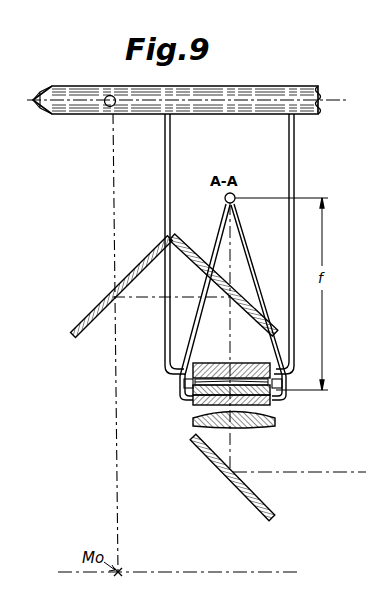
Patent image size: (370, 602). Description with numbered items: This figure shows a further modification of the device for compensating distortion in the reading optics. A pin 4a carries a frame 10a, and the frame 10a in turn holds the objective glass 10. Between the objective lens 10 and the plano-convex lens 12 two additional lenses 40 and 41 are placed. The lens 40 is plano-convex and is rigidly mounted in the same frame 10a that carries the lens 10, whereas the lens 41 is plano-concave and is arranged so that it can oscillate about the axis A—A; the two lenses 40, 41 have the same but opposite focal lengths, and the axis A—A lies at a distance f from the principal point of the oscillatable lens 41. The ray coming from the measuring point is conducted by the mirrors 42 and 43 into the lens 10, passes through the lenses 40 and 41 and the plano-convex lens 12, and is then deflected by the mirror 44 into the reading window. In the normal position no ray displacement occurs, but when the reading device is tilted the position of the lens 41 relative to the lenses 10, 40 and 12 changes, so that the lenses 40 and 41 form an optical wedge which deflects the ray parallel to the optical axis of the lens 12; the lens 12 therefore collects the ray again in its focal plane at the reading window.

The pin 4a is at (85, 107).
The frame 10a is at (295, 167).
The objective glass 10 is at (238, 372).
The lens 40 is at (181, 391).
The lens 41 is at (272, 401).
The plano-convex lens 12 is at (260, 425).
The mirror 42 is at (160, 246).
The mirror 43 is at (183, 242).
The mirror 44 is at (241, 492).